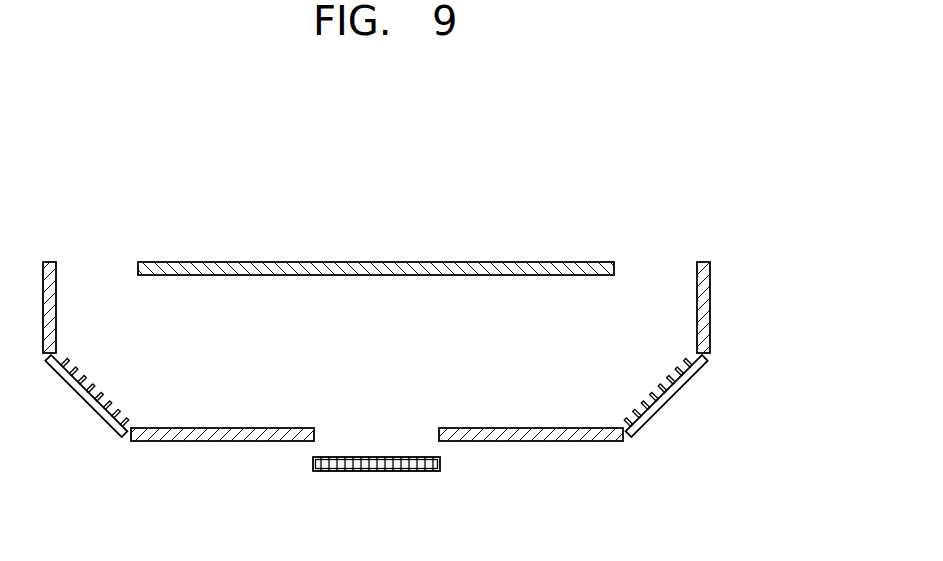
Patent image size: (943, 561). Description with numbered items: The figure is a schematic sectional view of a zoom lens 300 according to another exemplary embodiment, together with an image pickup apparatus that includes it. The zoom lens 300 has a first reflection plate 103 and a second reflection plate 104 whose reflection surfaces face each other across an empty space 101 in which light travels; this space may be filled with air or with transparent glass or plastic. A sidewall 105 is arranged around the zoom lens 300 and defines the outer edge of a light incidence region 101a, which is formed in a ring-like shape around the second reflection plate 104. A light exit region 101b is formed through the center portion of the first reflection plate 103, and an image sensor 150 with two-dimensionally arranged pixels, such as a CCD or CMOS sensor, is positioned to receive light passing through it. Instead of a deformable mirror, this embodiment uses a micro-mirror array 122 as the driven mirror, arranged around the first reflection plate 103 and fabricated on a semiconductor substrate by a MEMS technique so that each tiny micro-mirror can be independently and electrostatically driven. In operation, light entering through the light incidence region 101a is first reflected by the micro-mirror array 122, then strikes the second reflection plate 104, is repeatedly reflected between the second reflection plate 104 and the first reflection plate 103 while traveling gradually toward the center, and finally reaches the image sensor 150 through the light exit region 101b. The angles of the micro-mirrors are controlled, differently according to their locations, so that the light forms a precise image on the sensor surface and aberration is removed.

The empty space 101 is at (398, 338).
The light incidence region 101a is at (655, 260).
The light exit region 101b is at (337, 426).
The first reflection plate 103 is at (528, 442).
The second reflection plate 104 is at (380, 268).
The sidewall 105 is at (706, 303).
The micro-mirror array 122 is at (665, 392).
The image sensor 150 is at (378, 471).
The zoom lens 300 is at (732, 175).